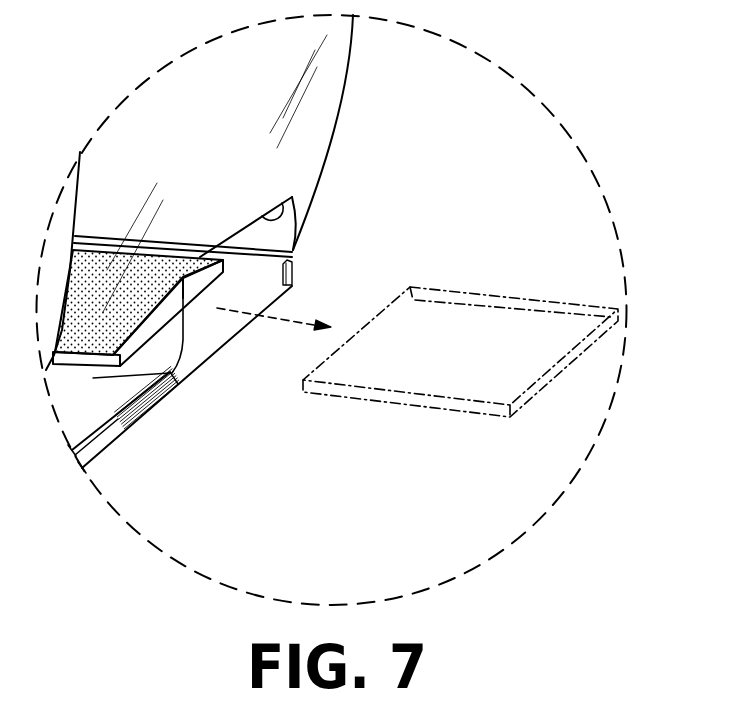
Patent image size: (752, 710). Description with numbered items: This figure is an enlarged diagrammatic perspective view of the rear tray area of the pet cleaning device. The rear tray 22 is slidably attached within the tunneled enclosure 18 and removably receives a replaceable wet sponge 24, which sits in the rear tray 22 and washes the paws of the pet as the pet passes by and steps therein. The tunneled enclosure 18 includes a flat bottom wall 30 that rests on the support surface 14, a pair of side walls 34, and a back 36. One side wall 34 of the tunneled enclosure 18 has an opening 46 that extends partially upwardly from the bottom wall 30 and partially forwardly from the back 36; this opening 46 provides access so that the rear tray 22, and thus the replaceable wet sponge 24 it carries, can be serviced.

The support surface 14 is at (424, 491).
The tunneled enclosure 18 is at (368, 61).
The rear tray 22 is at (98, 386).
The replaceable wet sponge 24 is at (106, 272).
The bottom wall 30 is at (206, 374).
The side wall 34 is at (288, 161).
The back 36 is at (232, 99).
The opening 46 is at (263, 214).